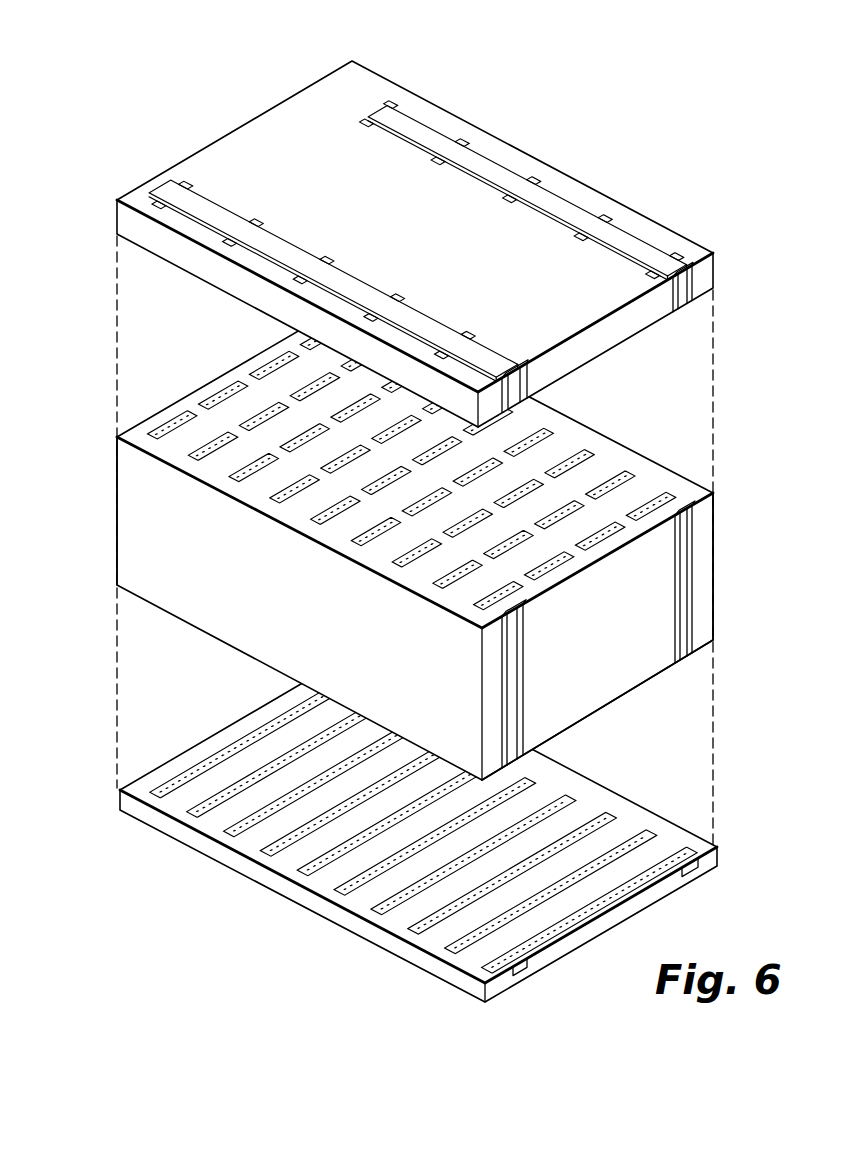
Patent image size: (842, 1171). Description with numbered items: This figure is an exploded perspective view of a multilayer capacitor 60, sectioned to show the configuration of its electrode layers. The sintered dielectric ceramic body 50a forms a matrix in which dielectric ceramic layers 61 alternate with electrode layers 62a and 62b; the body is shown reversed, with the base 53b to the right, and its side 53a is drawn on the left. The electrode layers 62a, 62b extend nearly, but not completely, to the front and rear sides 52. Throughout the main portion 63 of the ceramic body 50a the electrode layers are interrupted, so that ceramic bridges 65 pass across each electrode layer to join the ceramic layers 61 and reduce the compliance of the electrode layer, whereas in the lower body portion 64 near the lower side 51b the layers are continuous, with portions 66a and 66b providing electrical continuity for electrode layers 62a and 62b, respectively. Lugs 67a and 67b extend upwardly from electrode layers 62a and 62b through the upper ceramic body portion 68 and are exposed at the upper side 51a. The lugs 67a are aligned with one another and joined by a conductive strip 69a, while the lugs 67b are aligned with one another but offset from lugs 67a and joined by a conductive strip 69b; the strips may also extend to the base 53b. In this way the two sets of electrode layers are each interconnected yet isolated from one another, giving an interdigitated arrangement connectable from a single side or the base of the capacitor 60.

The multilayer capacitor 60 is at (60, 822).
The upper side 51a is at (330, 92).
The lower side 51b is at (330, 917).
The front and rear sides 52 is at (657, 463).
The left side face 53a is at (117, 497).
The base 53b is at (660, 623).
The sintered dielectric ceramic body 50a is at (715, 529).
The main portion 63 is at (715, 566).
The dielectric ceramic layers 61 is at (573, 453).
The electrode layers 62a is at (612, 482).
The electrode layers 62b is at (677, 494).
The ceramic bridges 65 is at (636, 522).
The portion 66a is at (633, 827).
The portion 66b is at (670, 847).
The lower body portion 64 is at (720, 855).
The conductive strip 69a is at (345, 284).
The conductive strip 69b is at (551, 203).
The lugs 67a is at (398, 296).
The lugs 67b is at (604, 217).
The upper ceramic body portion 68 is at (703, 279).